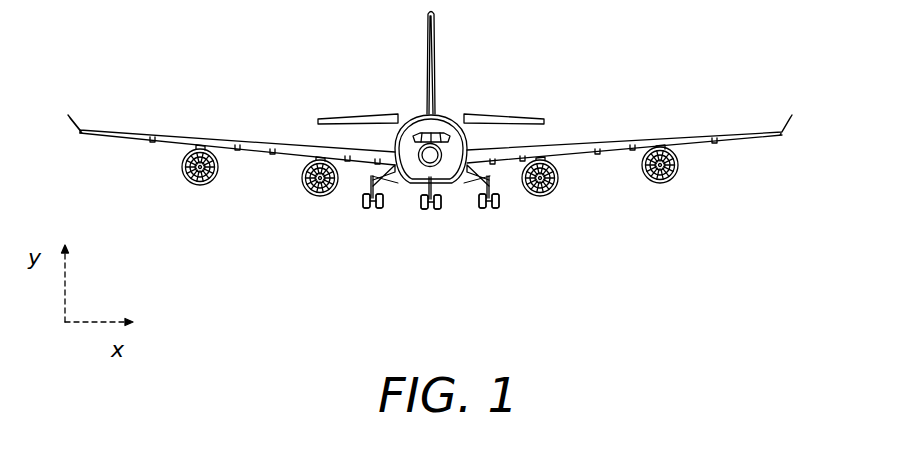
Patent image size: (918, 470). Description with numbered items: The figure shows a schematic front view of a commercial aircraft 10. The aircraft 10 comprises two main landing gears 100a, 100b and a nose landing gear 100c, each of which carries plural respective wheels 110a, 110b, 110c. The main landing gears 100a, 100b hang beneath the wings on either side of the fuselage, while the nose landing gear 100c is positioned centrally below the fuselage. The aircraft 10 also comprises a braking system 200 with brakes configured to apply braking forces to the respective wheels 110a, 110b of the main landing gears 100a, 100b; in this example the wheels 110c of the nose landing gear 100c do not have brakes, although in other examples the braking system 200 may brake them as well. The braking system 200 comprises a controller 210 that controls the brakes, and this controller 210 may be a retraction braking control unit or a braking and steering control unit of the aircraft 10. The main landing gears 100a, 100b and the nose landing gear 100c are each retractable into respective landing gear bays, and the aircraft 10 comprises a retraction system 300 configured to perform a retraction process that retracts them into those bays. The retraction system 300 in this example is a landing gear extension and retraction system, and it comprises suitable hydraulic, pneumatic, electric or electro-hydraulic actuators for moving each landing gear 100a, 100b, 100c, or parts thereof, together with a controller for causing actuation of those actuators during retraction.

The aircraft 10 is at (306, 76).
The braking system 200 is at (618, 98).
The controller 210 is at (460, 108).
The main landing gear 100a is at (355, 224).
The wheels 110a is at (297, 248).
The main landing gear 100b is at (508, 222).
The wheels 110b is at (557, 266).
The nose landing gear 100c is at (436, 226).
The wheels 110c is at (469, 274).
The retraction system 300 is at (390, 234).